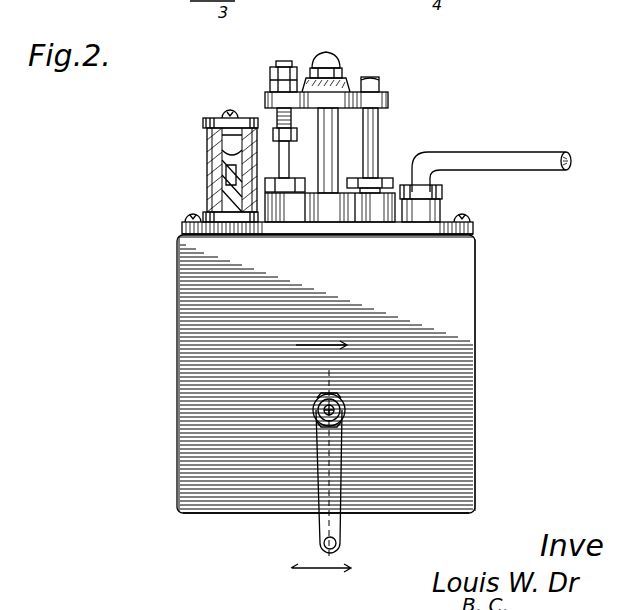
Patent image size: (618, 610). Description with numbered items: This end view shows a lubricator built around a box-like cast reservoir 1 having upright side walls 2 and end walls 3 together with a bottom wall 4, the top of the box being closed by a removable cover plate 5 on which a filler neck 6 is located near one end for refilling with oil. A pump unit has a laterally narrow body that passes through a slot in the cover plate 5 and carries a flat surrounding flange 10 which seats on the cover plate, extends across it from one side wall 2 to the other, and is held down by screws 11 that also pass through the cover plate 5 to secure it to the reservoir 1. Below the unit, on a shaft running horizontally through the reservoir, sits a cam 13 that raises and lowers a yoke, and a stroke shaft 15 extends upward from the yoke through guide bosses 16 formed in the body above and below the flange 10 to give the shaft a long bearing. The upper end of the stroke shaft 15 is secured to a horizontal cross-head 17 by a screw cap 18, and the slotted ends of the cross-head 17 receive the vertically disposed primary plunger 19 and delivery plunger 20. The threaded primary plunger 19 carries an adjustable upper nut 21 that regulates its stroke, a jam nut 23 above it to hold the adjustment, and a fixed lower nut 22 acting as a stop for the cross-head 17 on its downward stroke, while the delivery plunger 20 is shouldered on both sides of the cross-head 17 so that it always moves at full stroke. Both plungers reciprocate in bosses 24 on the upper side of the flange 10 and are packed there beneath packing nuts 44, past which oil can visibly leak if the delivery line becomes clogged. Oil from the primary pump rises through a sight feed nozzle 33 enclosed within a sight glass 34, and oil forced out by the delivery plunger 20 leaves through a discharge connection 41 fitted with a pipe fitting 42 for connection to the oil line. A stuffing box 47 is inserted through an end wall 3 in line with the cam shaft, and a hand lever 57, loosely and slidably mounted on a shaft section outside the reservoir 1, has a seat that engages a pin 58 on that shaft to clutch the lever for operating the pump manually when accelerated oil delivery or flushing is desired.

The reservoir 1 is at (169, 487).
The side wall 2 is at (177, 324).
The end wall 3 is at (326, 377).
The bottom wall 4 is at (376, 510).
The cover plate 5 is at (444, 240).
The filler neck 6 is at (321, 459).
The flange 10 is at (184, 228).
The screw 11 is at (185, 217).
The cam 13 is at (318, 420).
The stroke shaft 15 is at (370, 140).
The guide boss 16 is at (329, 222).
The cross-head 17 is at (265, 98).
The screw cap 18 is at (326, 55).
The primary plunger 19 is at (281, 62).
The delivery plunger 20 is at (380, 90).
The upper nut 21 is at (272, 78).
The lower nut 22 is at (258, 118).
The jam nut 23 is at (282, 64).
The boss 24 is at (288, 215).
The sight feed nozzle 33 is at (236, 182).
The sight glass 34 is at (210, 144).
The discharge connection 41 is at (438, 192).
The pipe fitting 42 is at (488, 156).
The packing nut 44 is at (370, 183).
The stuffing box 47 is at (310, 396).
The hand lever 57 is at (320, 518).
The pin 58 is at (345, 412).